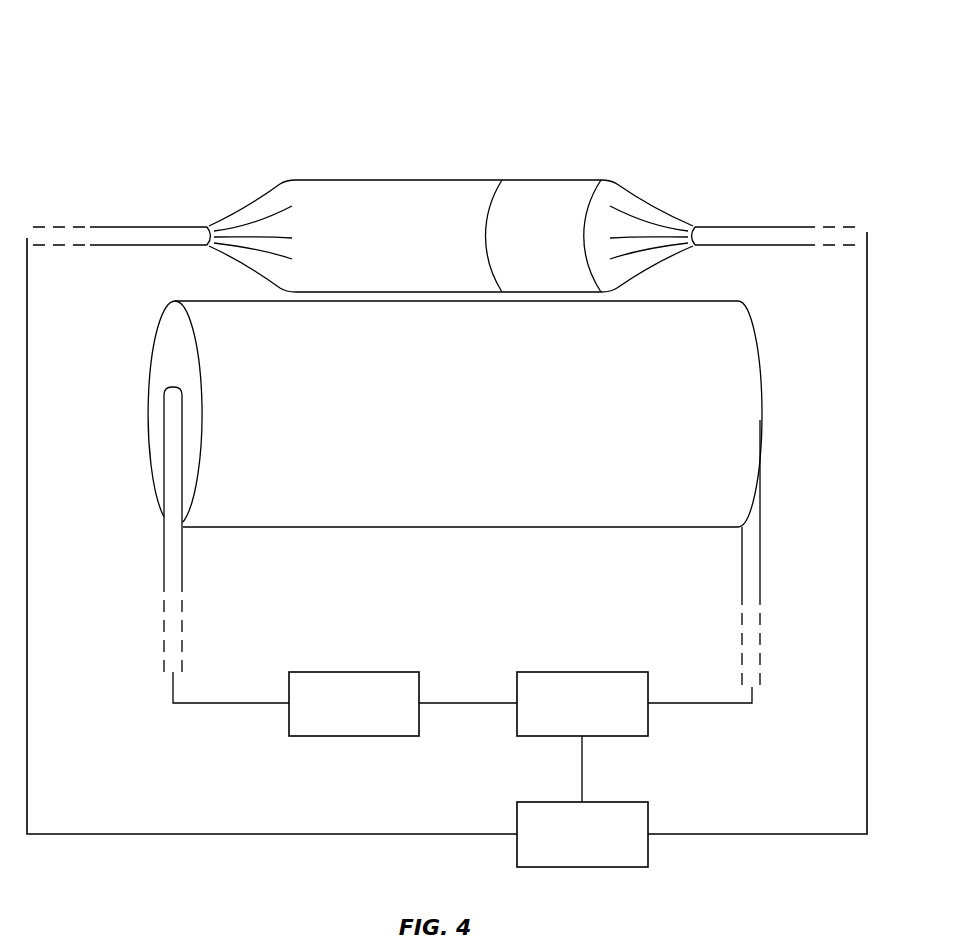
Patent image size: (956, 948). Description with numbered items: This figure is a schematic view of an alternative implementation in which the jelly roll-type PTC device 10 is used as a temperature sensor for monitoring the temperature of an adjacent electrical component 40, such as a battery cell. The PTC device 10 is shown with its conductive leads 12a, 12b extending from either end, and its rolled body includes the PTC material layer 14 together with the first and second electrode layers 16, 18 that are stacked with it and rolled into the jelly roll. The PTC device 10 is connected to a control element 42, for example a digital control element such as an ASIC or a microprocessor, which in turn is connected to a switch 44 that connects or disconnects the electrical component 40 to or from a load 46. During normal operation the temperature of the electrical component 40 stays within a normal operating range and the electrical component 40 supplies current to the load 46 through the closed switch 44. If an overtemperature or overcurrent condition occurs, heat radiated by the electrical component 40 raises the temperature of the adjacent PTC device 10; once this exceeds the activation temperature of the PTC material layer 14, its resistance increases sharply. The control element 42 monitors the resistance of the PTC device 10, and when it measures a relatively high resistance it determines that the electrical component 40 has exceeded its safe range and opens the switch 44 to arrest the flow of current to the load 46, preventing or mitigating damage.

The jelly roll-type PTC device 10 is at (279, 104).
The conductive lead 12a is at (143, 238).
The conductive lead 12b is at (755, 235).
The PTC material layer 14 is at (542, 202).
The first electrode layer 16 is at (408, 202).
The second electrode layer 18 is at (640, 202).
The electrical component 40 is at (439, 430).
The control element 42 is at (571, 845).
The switch 44 is at (571, 715).
The load 46 is at (343, 715).